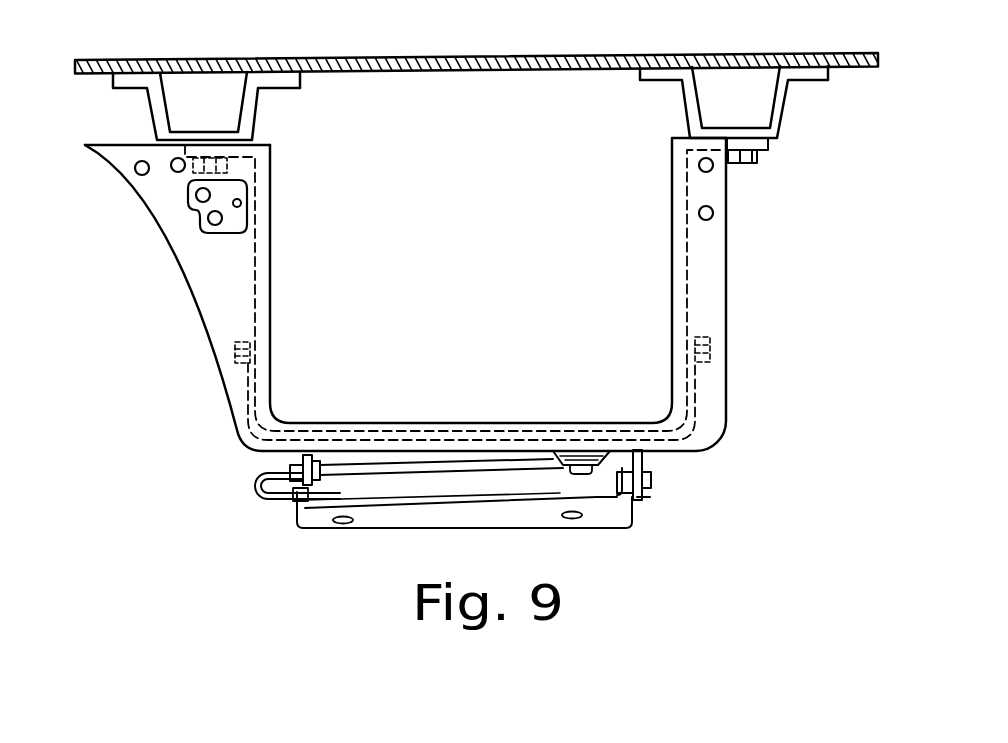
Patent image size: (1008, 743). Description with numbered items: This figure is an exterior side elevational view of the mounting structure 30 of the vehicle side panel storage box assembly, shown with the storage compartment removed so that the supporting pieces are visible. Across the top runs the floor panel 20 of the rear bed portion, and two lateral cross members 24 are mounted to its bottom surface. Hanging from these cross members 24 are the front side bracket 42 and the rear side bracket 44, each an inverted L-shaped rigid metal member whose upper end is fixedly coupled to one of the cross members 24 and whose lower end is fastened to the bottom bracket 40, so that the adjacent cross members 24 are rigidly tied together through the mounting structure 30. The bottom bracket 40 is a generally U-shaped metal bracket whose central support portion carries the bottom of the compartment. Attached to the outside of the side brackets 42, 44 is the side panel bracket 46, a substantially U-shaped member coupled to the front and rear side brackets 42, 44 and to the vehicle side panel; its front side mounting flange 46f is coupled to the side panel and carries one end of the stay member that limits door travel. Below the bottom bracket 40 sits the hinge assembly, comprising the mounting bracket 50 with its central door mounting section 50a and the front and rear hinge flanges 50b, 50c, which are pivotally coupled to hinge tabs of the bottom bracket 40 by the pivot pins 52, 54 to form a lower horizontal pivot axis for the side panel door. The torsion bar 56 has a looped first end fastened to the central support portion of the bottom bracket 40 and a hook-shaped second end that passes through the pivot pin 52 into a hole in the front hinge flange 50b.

The floor panel 20 is at (400, 57).
The lateral cross members 24 is at (253, 102).
The mounting structure 30 is at (206, 398).
The bottom bracket 40 is at (703, 385).
The front side bracket 42 is at (263, 265).
The rear side bracket 44 is at (682, 262).
The side panel bracket 46 is at (128, 200).
The front side mounting flange 46f is at (180, 228).
The mounting bracket 50 is at (372, 536).
The central door mounting section 50a is at (530, 515).
The front hinge flange 50b is at (293, 505).
The rear hinge flange 50c is at (647, 497).
The pivot pin 52 is at (260, 465).
The pivot pin 54 is at (653, 482).
The torsion bar 56 is at (413, 465).